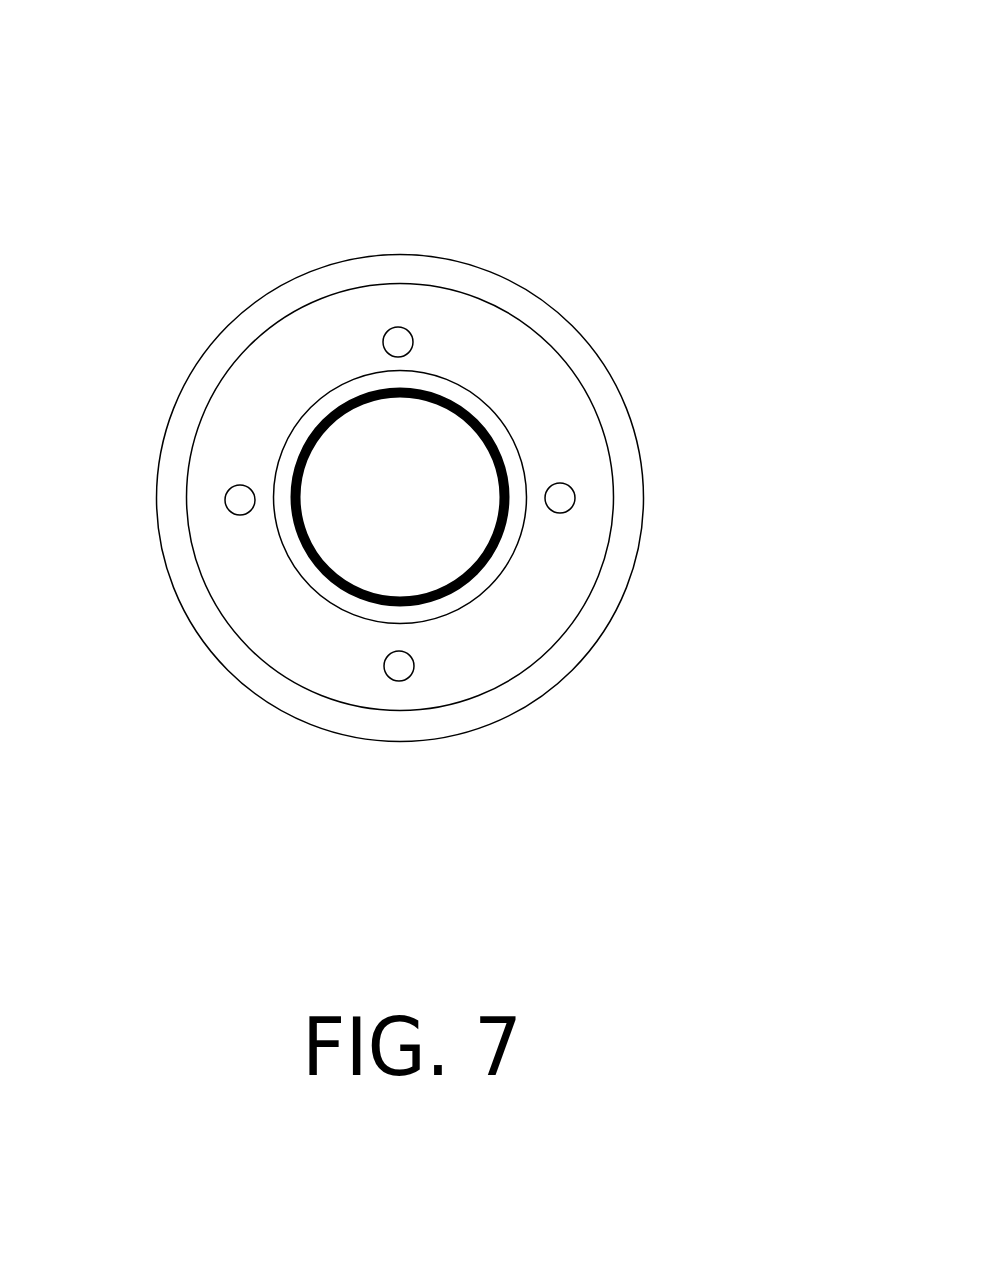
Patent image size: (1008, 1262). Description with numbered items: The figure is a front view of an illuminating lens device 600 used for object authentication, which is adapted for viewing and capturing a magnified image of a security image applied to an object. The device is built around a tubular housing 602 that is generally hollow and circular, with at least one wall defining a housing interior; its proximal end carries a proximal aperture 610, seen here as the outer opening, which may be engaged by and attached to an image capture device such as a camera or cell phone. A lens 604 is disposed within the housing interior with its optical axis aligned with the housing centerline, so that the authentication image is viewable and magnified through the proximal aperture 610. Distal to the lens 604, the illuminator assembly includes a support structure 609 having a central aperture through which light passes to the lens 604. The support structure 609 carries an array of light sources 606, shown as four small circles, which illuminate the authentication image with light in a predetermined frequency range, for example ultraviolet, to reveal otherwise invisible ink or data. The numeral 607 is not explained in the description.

The illuminating lens device 600 is at (261, 138).
The tubular housing 602 is at (610, 623).
The lens 604 is at (507, 470).
The light sources 606 is at (222, 503).
The inner annular shoulder 607 is at (296, 578).
The support structure 609 is at (532, 640).
The proximal aperture 610 is at (452, 258).